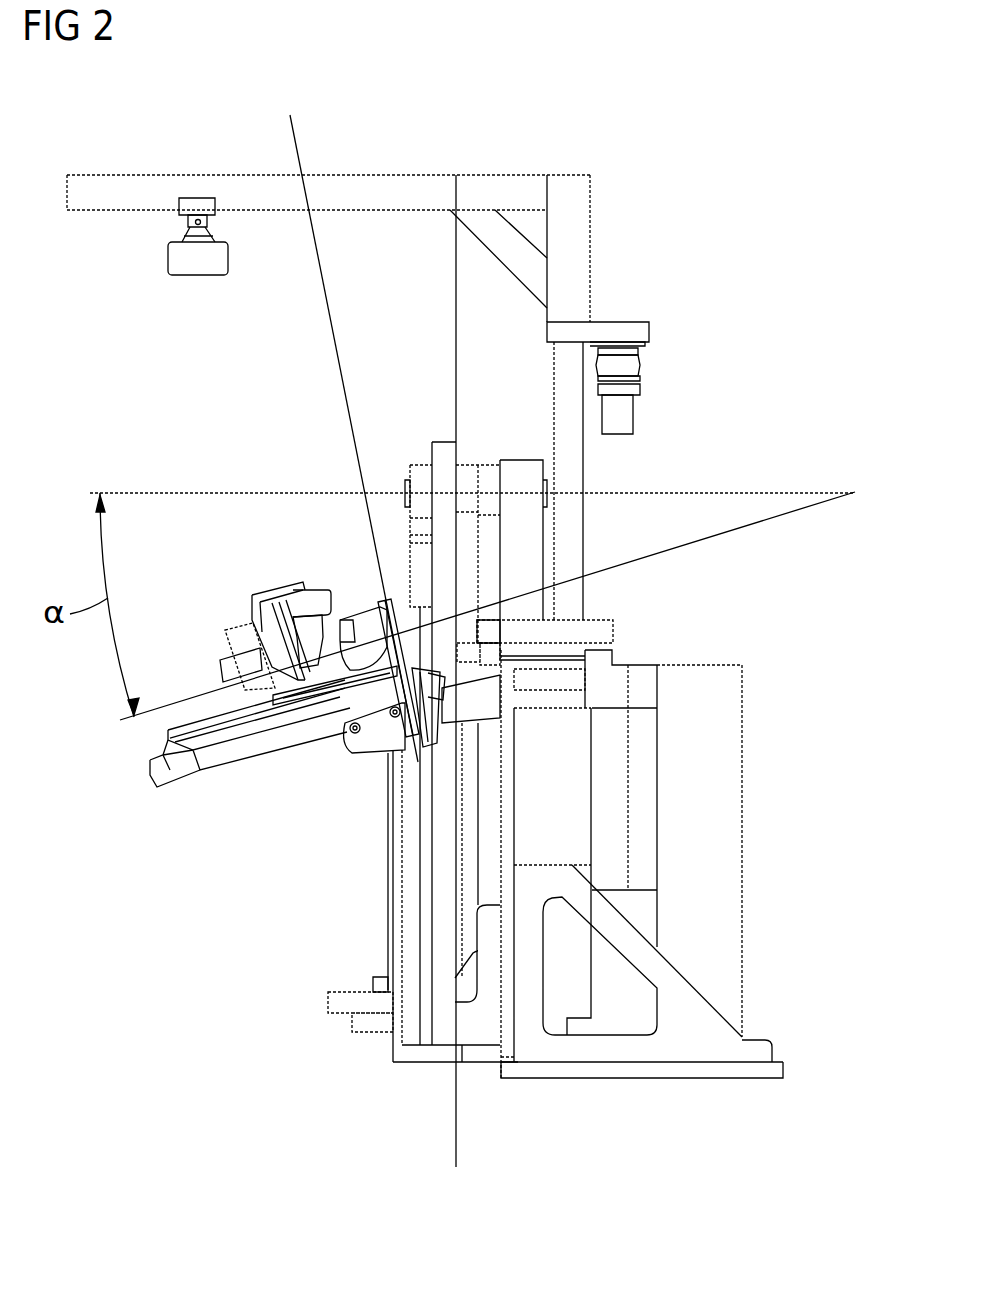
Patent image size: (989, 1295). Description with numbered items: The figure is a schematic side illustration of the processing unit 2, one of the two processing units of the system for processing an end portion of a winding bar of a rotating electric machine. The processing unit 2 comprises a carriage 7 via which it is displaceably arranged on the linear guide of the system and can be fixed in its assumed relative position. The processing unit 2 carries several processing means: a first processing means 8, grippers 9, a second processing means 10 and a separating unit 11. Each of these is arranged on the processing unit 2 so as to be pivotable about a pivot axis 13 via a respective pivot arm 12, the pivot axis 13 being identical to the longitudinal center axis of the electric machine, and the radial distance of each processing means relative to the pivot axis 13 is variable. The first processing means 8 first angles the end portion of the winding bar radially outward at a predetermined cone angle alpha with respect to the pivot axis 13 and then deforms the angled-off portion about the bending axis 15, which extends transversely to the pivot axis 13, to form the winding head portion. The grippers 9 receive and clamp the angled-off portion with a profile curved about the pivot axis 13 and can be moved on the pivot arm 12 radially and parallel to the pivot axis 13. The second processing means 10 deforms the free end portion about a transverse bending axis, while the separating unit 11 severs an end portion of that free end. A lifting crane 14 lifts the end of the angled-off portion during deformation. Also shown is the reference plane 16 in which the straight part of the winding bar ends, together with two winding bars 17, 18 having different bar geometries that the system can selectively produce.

The processing unit 2 is at (196, 140).
The carriage 7 is at (557, 1068).
The first processing means 8 is at (393, 590).
The processing means in the form of grippers 9 is at (413, 705).
The second processing means 10 is at (314, 580).
The processing means in the form of a separating unit 11 is at (228, 614).
The pivot arm 12 is at (532, 462).
The pivot axis 13 is at (758, 492).
The lifting crane 14 is at (112, 188).
The bending axis 15 is at (298, 145).
The reference plane 16 is at (455, 1132).
The winding bar 17 is at (612, 628).
The winding bar 18 is at (232, 670).